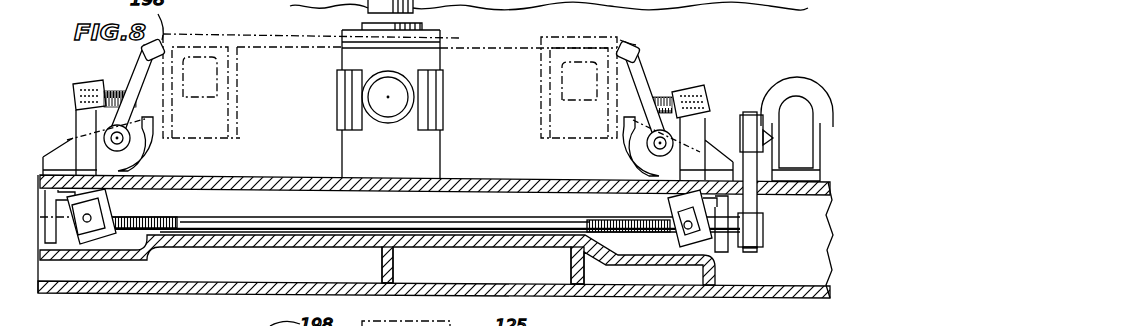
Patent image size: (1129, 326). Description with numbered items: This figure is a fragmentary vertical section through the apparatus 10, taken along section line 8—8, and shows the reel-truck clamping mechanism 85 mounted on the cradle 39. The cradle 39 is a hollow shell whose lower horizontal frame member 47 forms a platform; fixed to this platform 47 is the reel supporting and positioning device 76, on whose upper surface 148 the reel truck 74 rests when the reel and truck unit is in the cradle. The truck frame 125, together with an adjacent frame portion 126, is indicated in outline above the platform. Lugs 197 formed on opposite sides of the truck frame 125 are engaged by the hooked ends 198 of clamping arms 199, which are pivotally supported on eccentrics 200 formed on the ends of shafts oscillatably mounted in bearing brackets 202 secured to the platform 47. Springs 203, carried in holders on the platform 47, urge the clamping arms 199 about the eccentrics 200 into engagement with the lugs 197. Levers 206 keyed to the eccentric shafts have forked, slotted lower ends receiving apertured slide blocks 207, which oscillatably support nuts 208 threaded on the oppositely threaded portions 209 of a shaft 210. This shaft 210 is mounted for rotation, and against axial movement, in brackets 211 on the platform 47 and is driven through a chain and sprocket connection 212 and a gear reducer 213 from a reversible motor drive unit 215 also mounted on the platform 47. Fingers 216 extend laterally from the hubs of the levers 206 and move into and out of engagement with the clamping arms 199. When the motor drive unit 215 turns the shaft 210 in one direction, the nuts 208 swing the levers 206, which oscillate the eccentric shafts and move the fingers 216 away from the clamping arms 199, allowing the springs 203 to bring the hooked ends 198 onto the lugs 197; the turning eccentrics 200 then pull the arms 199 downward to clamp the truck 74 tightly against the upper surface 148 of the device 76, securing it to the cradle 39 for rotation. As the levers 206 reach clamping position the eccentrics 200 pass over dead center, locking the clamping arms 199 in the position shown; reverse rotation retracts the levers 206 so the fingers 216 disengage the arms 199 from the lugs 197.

The section line 8 is at (826, 9).
The machine 10 is at (55, 84).
The cradle 39 is at (753, 302).
The lower frame member 47 is at (305, 177).
The reel truck 74 is at (206, 36).
The reel supporting and positioning device 76 is at (424, 153).
The reel-truck clamping mechanism 85 is at (720, 72).
The reel truck frame 125 is at (531, 42).
The phantom outline 126 is at (230, 152).
The upper surface 148 is at (342, 44).
The lugs 197 is at (142, 53).
The hooked ends 198 is at (626, 44).
The clamping arms 199 is at (141, 70).
The eccentrics 200 is at (648, 150).
The bearing brackets 202 is at (67, 144).
The springs 203 is at (117, 96).
The levers 206 is at (148, 211).
The slide blocks 207 is at (82, 258).
The nuts 208 is at (78, 262).
The oppositely threaded portions 209 is at (146, 262).
The shaft 210 is at (365, 221).
The brackets 211 is at (108, 204).
The chain and sprocket connection 212 is at (758, 200).
The gear reducer 213 is at (796, 138).
The reversible motor drive unit 215 is at (797, 80).
The fingers 216 is at (153, 124).